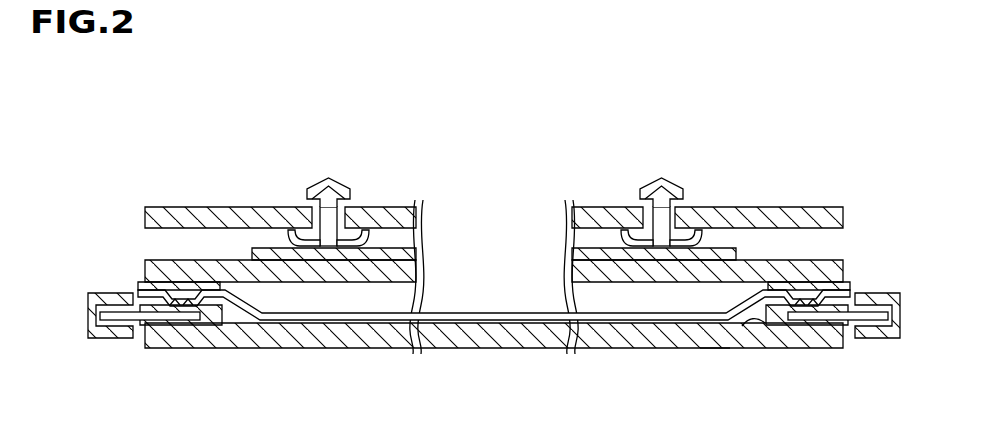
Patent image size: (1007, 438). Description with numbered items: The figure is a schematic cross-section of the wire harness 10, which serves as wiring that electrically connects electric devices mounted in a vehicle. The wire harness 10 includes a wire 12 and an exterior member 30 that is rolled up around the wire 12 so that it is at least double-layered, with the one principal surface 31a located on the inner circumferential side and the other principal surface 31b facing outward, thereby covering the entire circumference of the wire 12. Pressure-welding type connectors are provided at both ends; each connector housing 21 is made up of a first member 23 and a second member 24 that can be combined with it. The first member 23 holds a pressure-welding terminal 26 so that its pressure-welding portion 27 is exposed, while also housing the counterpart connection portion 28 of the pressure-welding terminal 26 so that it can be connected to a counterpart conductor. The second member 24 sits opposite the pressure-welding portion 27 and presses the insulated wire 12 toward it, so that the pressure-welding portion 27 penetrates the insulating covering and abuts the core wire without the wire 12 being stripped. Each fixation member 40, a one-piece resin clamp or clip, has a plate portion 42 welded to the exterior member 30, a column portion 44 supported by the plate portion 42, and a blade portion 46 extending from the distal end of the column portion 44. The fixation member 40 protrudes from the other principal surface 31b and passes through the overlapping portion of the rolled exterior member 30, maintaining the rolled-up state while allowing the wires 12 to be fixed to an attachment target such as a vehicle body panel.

The wire harness 10 is at (229, 97).
The wire 12 is at (309, 322).
The connector housing 21 is at (492, 271).
The first member 23 is at (101, 293).
The second member 24 is at (494, 264).
The pressure-welding terminal 26 is at (494, 364).
The pressure-welding portion 27 is at (160, 326).
The counterpart connection portion 28 is at (110, 335).
The exterior member 30 is at (351, 348).
The one principal surface 31a is at (762, 347).
The other principal surface 31b is at (714, 350).
The fixation member 40 is at (515, 180).
The plate portion 42 is at (268, 250).
The column portion 44 is at (325, 210).
The blade portion 46 is at (348, 186).